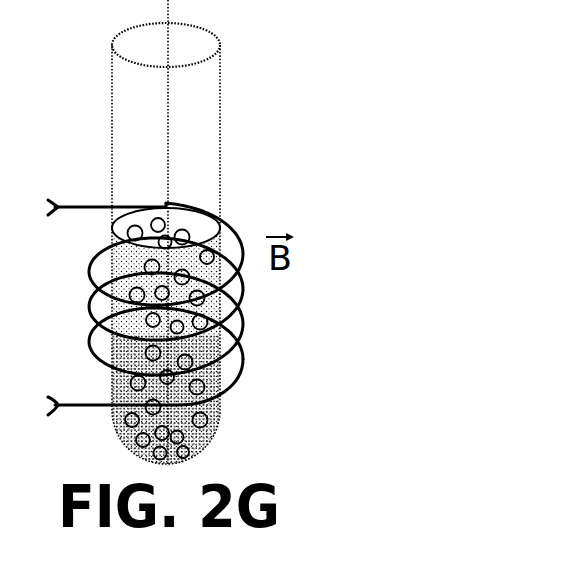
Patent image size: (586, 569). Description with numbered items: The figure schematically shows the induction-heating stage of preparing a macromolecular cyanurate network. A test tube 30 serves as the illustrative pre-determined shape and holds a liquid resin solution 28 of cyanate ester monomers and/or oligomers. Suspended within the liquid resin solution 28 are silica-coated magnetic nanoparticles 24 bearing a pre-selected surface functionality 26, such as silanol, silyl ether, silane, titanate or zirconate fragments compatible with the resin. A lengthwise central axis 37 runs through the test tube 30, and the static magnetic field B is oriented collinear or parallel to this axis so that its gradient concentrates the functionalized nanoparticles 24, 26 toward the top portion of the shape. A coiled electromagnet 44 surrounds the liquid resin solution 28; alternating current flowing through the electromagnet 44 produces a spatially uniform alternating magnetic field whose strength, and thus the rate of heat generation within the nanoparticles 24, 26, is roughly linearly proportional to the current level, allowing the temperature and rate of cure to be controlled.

The silica-coated magnetic nanoparticles 24 is at (150, 268).
The surface functionality 26 is at (150, 336).
The liquid resin solution 28 is at (200, 430).
The test tube 30 is at (218, 108).
The lengthwise central axis 37 is at (168, 90).
The coiled electromagnet 44 is at (231, 225).